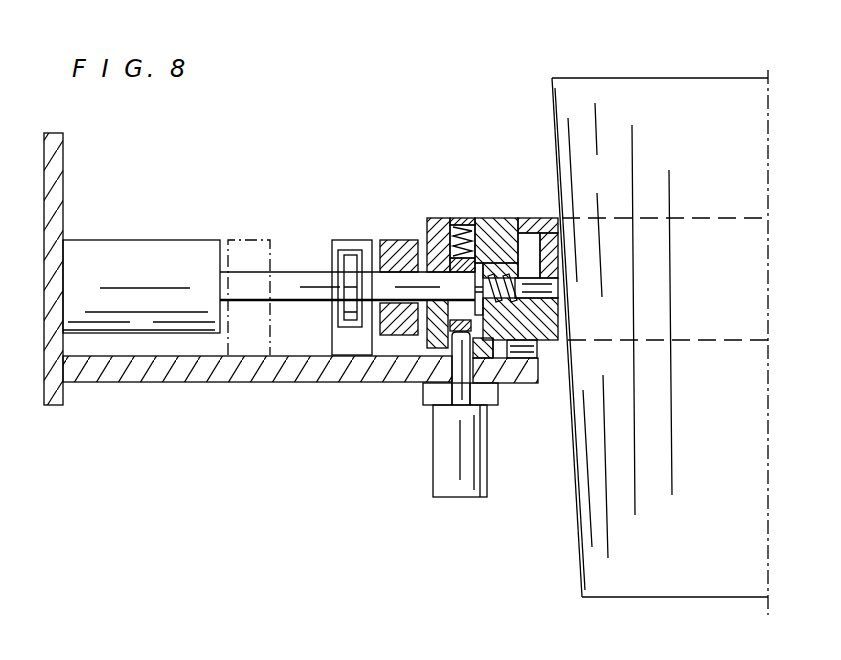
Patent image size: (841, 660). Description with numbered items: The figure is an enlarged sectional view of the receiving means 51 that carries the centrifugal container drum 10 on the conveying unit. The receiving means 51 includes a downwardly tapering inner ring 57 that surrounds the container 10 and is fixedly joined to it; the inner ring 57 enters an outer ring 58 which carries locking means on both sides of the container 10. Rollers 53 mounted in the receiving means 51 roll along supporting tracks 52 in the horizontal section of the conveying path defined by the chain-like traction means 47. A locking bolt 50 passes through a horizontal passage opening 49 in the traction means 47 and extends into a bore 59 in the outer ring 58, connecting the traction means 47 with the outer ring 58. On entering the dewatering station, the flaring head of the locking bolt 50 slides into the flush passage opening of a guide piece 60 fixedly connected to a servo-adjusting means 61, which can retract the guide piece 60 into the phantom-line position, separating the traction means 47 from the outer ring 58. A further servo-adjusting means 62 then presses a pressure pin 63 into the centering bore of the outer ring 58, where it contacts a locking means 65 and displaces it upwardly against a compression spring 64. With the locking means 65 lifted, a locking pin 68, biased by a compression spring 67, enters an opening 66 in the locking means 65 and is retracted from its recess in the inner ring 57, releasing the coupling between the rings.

The container drum 10 is at (576, 538).
The traction means 47 is at (397, 240).
The passage opening 49 is at (405, 303).
The locking bolt 50 is at (367, 282).
The receiving means 51 is at (487, 212).
The supporting tracks 52 is at (195, 383).
The rollers 53 is at (538, 345).
The inner ring 57 is at (557, 217).
The outer ring 58 is at (492, 233).
The bore 59 is at (434, 218).
The guide piece 60 is at (352, 342).
The servo-adjusting means 61 is at (142, 238).
The further servo-adjusting means 62 is at (466, 498).
The pressure pin 63 is at (460, 370).
The compression spring 64 is at (460, 238).
The locking means 65 is at (458, 314).
The opening 66 is at (425, 333).
The compression spring 67 is at (517, 360).
The locking pin 68 is at (521, 233).